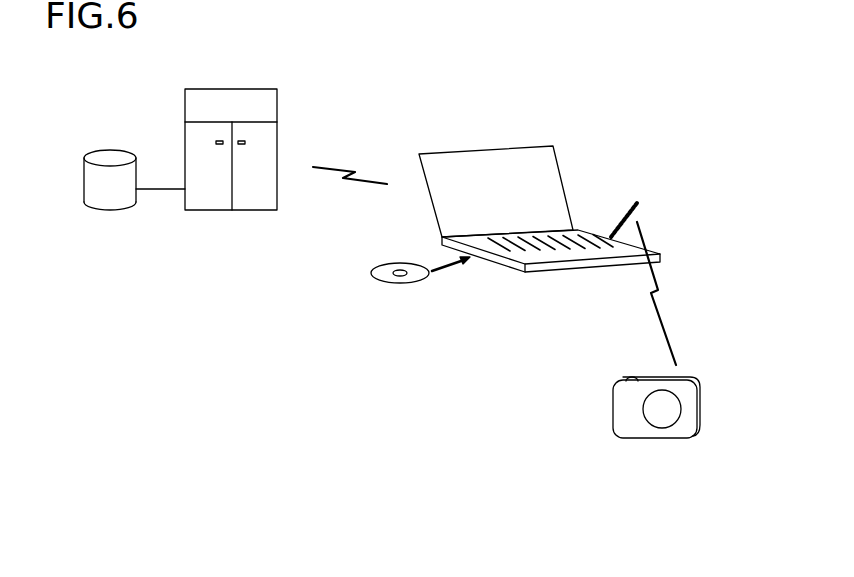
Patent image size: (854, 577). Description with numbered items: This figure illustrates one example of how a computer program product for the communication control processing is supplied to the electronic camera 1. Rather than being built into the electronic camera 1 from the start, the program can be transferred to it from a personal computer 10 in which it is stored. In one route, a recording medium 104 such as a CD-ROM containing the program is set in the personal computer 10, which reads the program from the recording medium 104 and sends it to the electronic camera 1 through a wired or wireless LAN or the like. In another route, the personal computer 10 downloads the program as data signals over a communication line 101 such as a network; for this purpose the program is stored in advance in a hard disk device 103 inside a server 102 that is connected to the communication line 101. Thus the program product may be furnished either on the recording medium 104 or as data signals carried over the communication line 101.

The electronic camera 1 is at (650, 454).
The personal computer 10 is at (537, 145).
The communication line 101 is at (351, 162).
The server 102 is at (248, 89).
The hard disk device 103 is at (105, 150).
The recording medium 104 is at (388, 285).